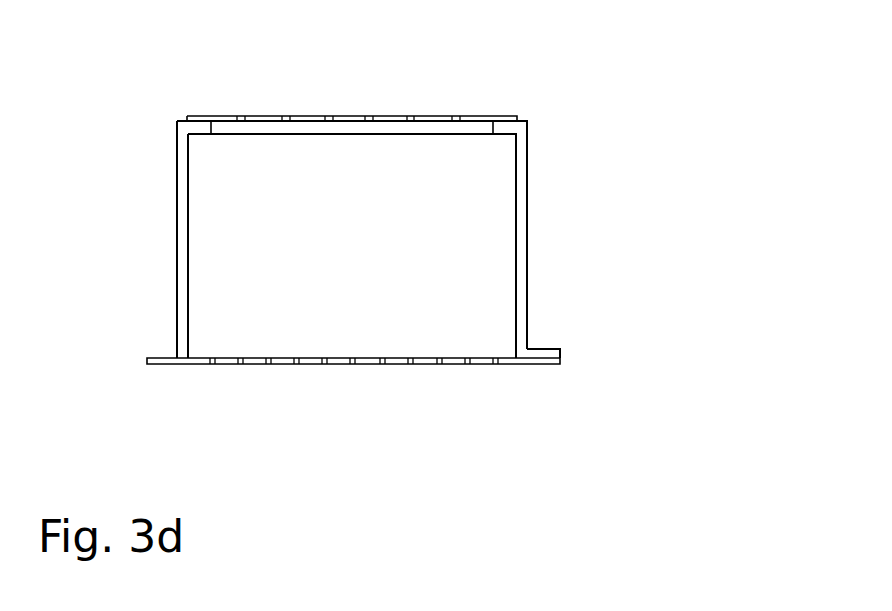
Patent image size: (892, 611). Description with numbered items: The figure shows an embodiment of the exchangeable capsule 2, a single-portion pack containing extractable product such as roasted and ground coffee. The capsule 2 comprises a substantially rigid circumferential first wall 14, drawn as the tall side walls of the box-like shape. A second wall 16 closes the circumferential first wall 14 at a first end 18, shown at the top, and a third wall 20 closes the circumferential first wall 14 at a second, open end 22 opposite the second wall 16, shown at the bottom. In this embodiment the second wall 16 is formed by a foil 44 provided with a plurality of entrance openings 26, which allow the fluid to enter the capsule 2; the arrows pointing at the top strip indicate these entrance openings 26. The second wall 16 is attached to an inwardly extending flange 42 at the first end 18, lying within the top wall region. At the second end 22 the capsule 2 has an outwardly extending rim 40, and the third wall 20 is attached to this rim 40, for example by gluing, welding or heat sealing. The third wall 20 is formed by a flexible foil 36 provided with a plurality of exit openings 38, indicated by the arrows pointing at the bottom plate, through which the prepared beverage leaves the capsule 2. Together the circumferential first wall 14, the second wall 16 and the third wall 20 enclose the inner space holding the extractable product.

The exchangeable capsule 2 is at (460, 237).
The circumferential first wall 14 is at (383, 239).
The second wall 16 is at (390, 79).
The first end 18 is at (521, 145).
The third wall 20 is at (353, 396).
The second end 22 is at (522, 343).
The entrance openings 26 is at (330, 112).
The flexible foil 36 is at (353, 396).
The exit openings 38 is at (298, 367).
The outwardly extending rim 40 is at (550, 354).
The inwardly extending flange 42 is at (503, 128).
The foil 44 is at (352, 86).